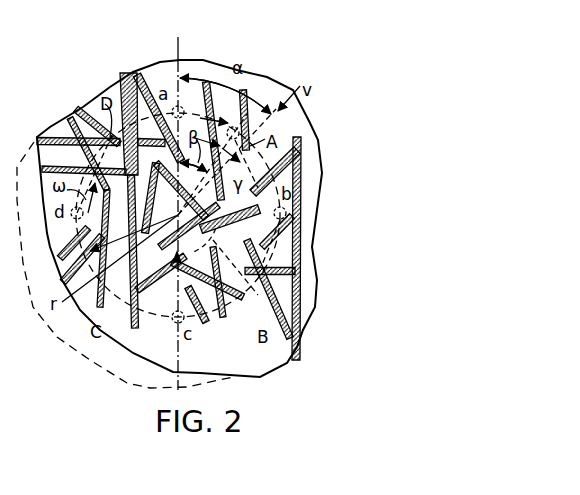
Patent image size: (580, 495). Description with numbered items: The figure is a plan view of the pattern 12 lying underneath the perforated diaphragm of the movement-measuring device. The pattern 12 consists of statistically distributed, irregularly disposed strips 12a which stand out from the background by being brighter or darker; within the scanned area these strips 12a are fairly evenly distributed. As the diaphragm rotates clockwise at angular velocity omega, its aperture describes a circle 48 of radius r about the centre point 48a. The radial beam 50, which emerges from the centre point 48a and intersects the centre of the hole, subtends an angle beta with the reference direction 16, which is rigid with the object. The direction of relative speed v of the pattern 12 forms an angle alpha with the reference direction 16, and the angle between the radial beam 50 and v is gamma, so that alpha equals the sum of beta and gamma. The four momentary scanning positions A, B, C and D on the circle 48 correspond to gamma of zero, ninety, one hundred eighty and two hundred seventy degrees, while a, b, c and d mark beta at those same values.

The pattern 12 is at (306, 298).
The strips 12a is at (303, 248).
The reference direction 16 is at (177, 45).
The circle 48 is at (160, 318).
The centre point 48a is at (161, 278).
The radial beam 50 is at (214, 243).